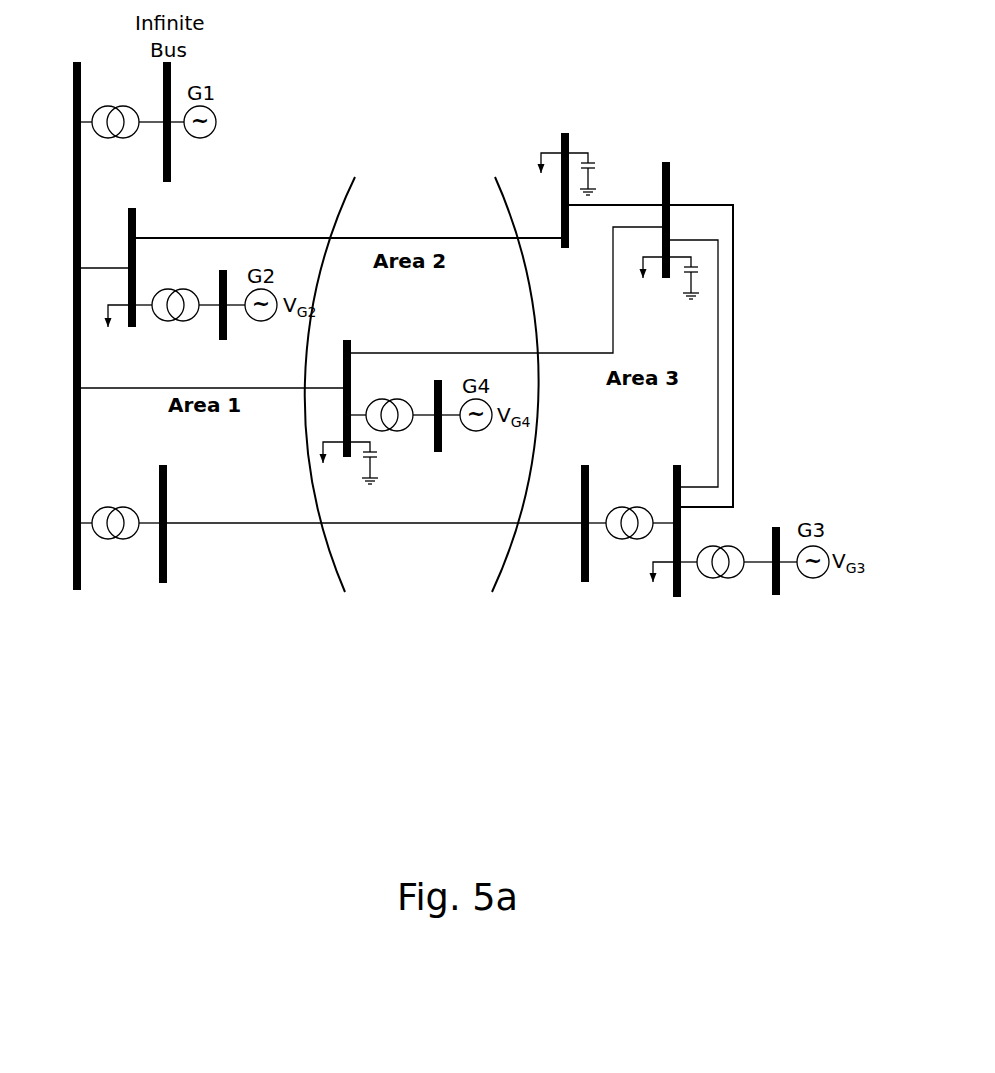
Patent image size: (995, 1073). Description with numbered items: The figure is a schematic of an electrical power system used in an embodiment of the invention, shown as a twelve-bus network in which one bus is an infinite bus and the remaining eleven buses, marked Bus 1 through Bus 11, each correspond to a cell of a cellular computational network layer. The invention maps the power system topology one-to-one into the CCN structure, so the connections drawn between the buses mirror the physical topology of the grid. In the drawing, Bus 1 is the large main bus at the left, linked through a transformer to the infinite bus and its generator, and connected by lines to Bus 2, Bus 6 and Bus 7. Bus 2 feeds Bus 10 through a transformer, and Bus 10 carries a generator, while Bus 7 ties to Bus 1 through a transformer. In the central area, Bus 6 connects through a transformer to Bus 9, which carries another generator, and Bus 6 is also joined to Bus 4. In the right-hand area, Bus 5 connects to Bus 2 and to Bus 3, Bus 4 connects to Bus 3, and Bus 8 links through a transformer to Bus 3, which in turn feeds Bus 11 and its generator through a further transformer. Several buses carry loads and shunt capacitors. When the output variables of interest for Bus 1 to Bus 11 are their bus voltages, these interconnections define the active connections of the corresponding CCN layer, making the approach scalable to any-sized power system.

The Bus 1 is at (76, 329).
The Bus 2 is at (131, 269).
The Bus 3 is at (678, 535).
The Bus 4 is at (668, 222).
The Bus 5 is at (566, 192).
The Bus 6 is at (348, 403).
The Bus 7 is at (161, 527).
The Bus 8 is at (583, 526).
The Bus 9 is at (436, 416).
The Bus 10 is at (222, 305).
The Bus 11 is at (774, 561).